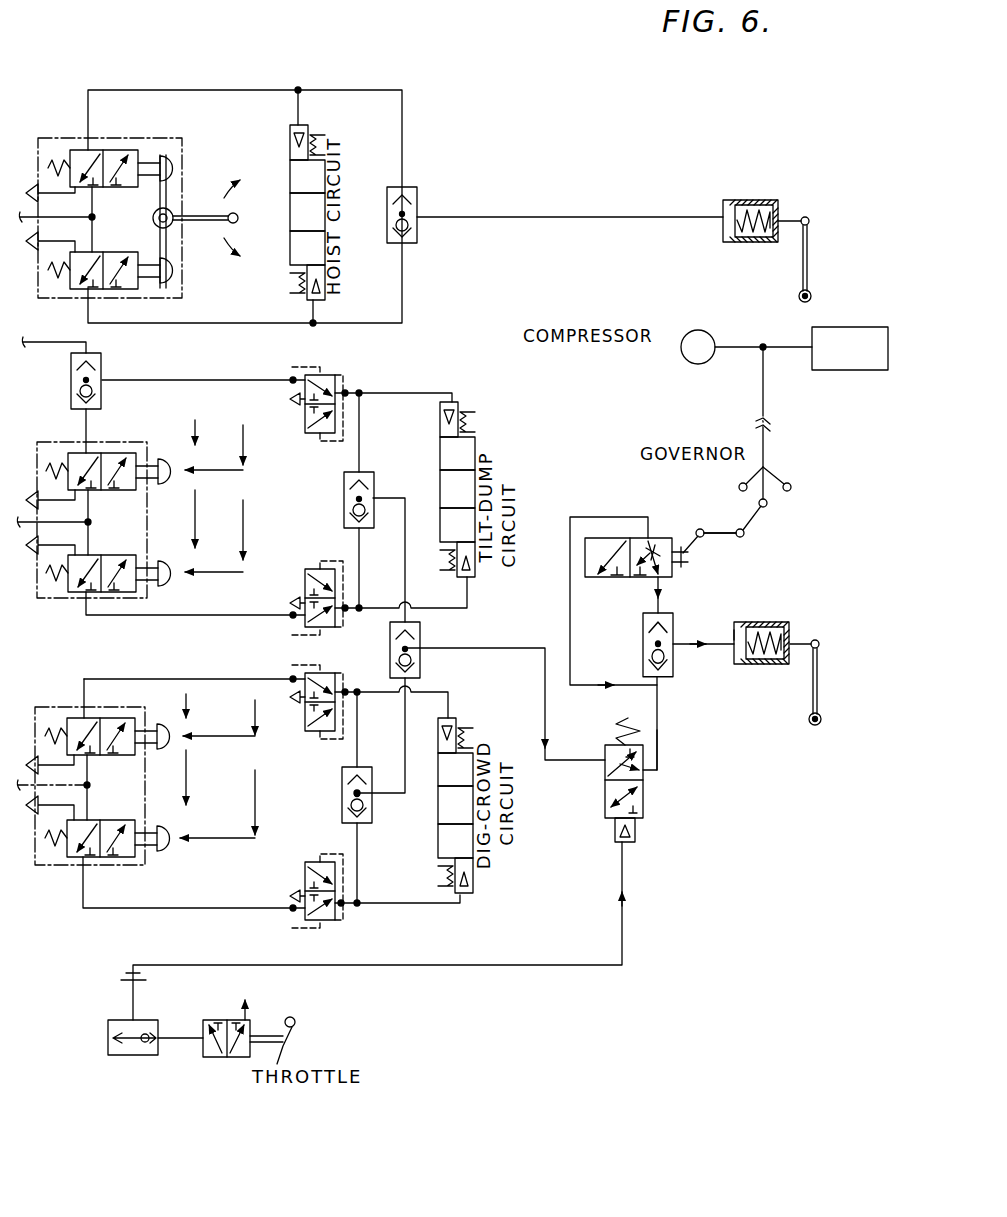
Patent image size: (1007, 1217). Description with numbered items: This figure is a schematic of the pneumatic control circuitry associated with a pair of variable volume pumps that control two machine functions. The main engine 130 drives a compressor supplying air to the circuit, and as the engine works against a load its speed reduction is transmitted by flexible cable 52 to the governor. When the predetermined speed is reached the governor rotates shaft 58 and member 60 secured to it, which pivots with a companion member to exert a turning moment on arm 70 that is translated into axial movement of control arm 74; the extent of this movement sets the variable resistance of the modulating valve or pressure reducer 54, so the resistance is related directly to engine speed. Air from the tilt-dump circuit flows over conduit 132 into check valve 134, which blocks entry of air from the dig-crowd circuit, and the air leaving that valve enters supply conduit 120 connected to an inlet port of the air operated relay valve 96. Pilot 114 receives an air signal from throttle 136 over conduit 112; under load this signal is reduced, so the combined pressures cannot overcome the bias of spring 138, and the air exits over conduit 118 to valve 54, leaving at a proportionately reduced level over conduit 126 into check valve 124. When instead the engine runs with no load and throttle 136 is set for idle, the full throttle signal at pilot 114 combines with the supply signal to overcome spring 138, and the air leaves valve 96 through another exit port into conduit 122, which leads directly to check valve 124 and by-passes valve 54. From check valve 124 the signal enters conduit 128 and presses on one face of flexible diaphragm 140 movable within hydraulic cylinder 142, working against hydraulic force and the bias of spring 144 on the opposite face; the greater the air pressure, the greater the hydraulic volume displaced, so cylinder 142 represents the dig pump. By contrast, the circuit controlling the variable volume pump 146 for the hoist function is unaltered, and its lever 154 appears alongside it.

The flexible cable 52 is at (766, 396).
The modulating valve 54 is at (657, 538).
The shaft 58 is at (768, 505).
The member 60 is at (748, 528).
The arm 70 is at (720, 540).
The control arm 74 is at (682, 548).
The air operated relay valve 96 is at (645, 786).
The conduit 112 is at (525, 967).
The pilot 114 is at (637, 832).
The conduit 118 is at (659, 713).
The supply conduit 120 is at (480, 648).
The conduit 122 is at (660, 740).
The check valve 124 is at (665, 613).
The conduit 126 is at (653, 601).
The conduit 128 is at (718, 648).
The main engine 130 is at (858, 370).
The conduit 132 is at (408, 590).
The check valve 134 is at (420, 676).
The throttle 136 is at (157, 1053).
The spring 138 is at (628, 718).
The flexible diaphragm 140 is at (735, 635).
The hydraulic cylinder 142 is at (790, 632).
The spring 144 is at (762, 667).
The variable volume pump 146 is at (742, 243).
The hoist pump control lever 154 is at (809, 268).